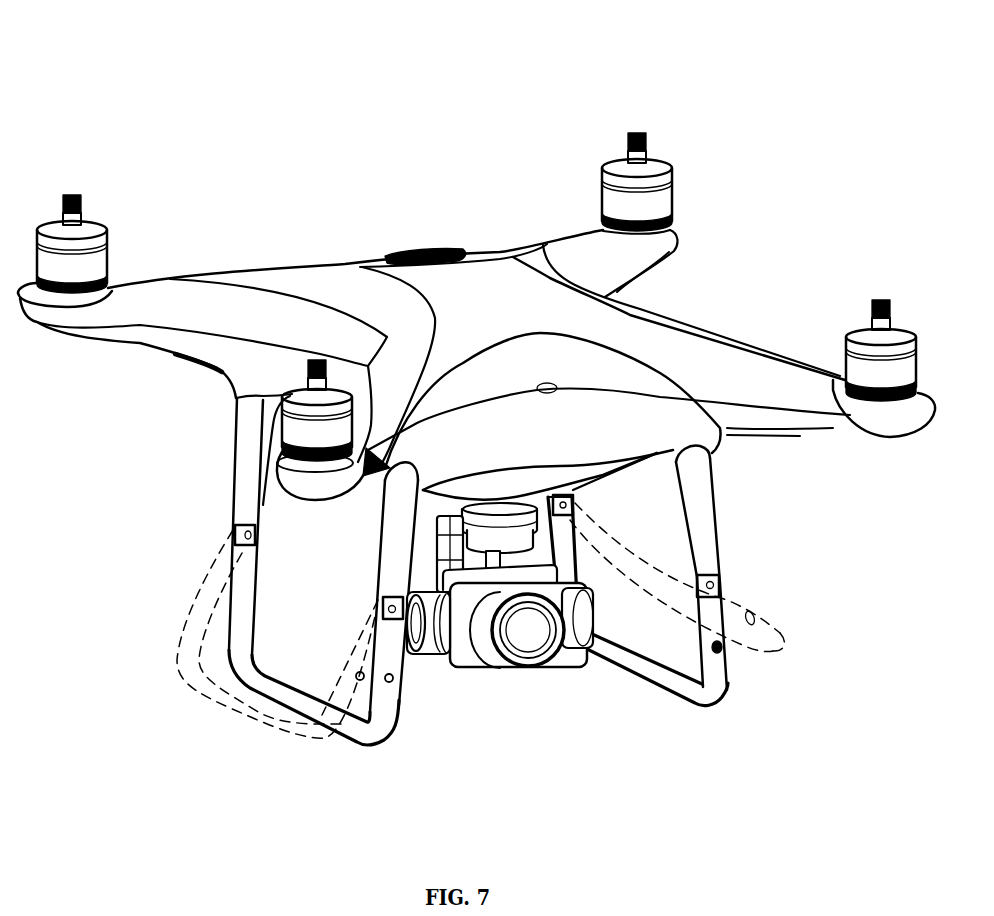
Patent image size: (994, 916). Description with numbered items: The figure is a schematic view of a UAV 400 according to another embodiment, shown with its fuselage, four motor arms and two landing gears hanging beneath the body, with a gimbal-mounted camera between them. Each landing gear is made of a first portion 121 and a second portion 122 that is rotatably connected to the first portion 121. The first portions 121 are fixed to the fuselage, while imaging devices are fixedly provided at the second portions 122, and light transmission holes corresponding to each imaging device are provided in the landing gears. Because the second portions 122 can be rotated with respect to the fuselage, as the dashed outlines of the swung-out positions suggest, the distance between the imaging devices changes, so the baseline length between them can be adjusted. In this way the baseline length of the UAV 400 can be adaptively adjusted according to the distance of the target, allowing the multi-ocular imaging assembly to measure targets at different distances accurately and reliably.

The UAV 400 is at (337, 65).
The first portion 121 is at (393, 560).
The second portion 122 is at (387, 707).